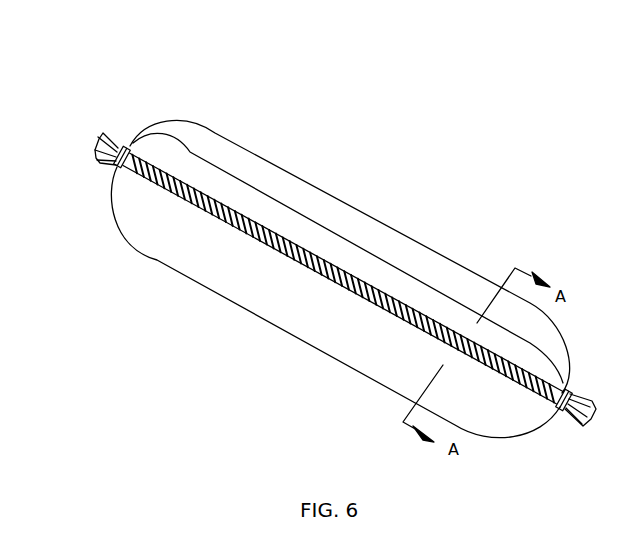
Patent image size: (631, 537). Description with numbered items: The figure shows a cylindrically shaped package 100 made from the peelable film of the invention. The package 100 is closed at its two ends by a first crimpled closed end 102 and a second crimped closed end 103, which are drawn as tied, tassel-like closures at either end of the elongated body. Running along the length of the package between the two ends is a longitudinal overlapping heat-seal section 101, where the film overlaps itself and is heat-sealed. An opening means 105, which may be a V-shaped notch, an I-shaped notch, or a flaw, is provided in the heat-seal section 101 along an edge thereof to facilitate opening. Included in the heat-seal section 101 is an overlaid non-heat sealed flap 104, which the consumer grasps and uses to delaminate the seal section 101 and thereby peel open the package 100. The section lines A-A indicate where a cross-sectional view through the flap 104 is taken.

The cylindrically shaped package 100 is at (423, 72).
The longitudinal overlapping heat-seal section 101 is at (250, 230).
The first crimpled closed end 102 is at (107, 163).
The second crimped closed end 103 is at (565, 410).
The overlaid non-heat sealed flap 104 is at (420, 282).
The opening means 105 is at (207, 168).